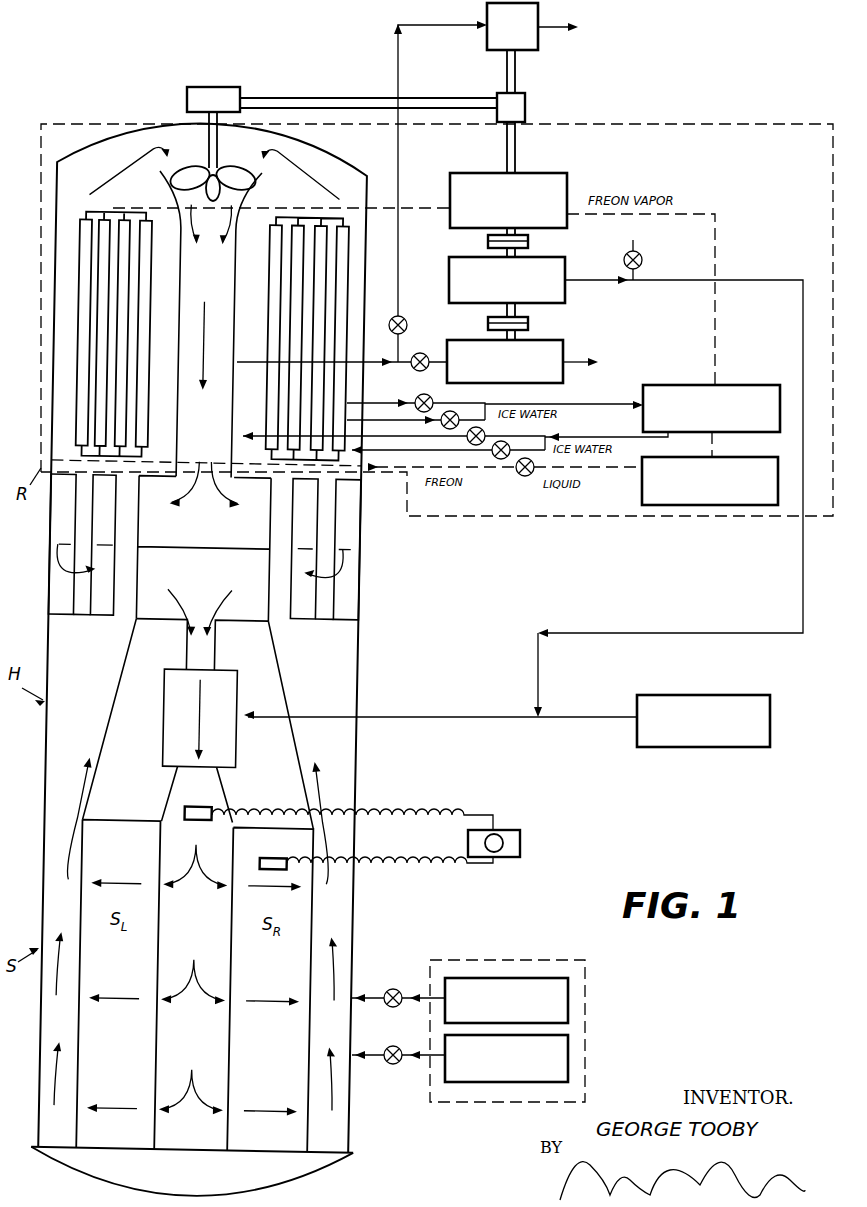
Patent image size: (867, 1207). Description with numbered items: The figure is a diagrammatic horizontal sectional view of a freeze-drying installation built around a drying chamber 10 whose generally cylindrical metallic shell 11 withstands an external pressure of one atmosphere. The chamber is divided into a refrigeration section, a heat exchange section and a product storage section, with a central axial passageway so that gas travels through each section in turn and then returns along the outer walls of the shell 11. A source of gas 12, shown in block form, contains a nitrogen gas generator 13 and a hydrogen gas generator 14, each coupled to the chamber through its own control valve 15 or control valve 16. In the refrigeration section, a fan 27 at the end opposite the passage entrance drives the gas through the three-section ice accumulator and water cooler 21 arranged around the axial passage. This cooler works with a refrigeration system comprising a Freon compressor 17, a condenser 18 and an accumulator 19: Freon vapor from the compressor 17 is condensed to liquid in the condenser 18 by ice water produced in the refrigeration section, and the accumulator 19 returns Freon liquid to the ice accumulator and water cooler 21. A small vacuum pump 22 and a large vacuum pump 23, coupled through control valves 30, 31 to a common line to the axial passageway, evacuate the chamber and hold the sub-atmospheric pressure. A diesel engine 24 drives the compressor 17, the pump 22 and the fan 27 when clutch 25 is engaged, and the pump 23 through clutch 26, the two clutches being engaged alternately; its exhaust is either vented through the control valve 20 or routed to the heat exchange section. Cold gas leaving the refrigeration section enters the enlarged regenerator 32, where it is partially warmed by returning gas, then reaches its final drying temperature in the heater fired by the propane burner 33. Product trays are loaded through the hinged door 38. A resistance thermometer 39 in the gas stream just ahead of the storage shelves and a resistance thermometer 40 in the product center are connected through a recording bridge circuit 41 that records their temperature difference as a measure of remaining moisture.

The drying chamber 10 is at (42, 832).
The shell 11 is at (357, 907).
The source of gas 12 is at (535, 960).
The nitrogen gas generator 13 is at (568, 990).
The hydrogen gas generator 14 is at (568, 1056).
The control valve 15 is at (405, 970).
The control valve 16 is at (394, 1065).
The Freon compressor 17 is at (555, 173).
The condenser 18 is at (740, 385).
The accumulator 19 is at (668, 506).
The control valve 20 is at (643, 260).
The ice accumulator and water cooler 21 is at (350, 244).
The vacuum pump 22 is at (540, 45).
The vacuum pump 23 is at (600, 364).
The diesel engine 24 is at (565, 298).
The clutch 25 is at (528, 241).
The clutch 26 is at (528, 324).
The fan 27 is at (185, 147).
The control valve 30 is at (402, 318).
The control valve 31 is at (422, 352).
The regenerator 32 is at (365, 522).
The propane burner 33 is at (695, 750).
The door 38 is at (305, 1165).
The resistance thermometer 39 is at (185, 812).
The resistance thermometer 40 is at (260, 860).
The recording bridge circuit 41 is at (520, 845).